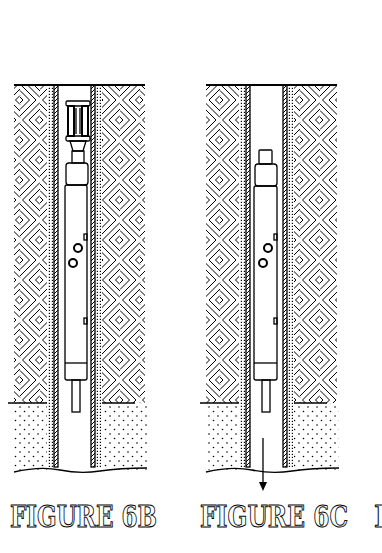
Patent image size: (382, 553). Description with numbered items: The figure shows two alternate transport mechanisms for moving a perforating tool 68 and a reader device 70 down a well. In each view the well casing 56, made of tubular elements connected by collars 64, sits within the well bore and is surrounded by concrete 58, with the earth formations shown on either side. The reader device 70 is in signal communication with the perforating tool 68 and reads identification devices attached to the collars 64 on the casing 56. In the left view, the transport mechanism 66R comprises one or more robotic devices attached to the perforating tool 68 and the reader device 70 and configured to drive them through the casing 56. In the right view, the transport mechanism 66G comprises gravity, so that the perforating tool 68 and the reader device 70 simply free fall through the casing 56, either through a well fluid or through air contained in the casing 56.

In FIG. 6B, the well casing 56 is at (93, 94).
In FIG. 6C, the well casing 56 is at (284, 94).
In FIG. 6B, the concrete 58 is at (100, 101).
In FIG. 6C, the concrete 58 is at (291, 101).
In FIG. 6B, the collars 64 is at (100, 172).
In FIG. 6C, the collars 64 is at (290, 172).
In FIG. 6B, the transport mechanism 66R is at (77, 93).
In FIG. 6C, the transport mechanism 66G is at (258, 456).
In FIG. 6B, the perforating tool 68 is at (76, 205).
In FIG. 6C, the perforating tool 68 is at (266, 205).
In FIG. 6B, the reader device 70 is at (78, 400).
In FIG. 6C, the reader device 70 is at (268, 400).